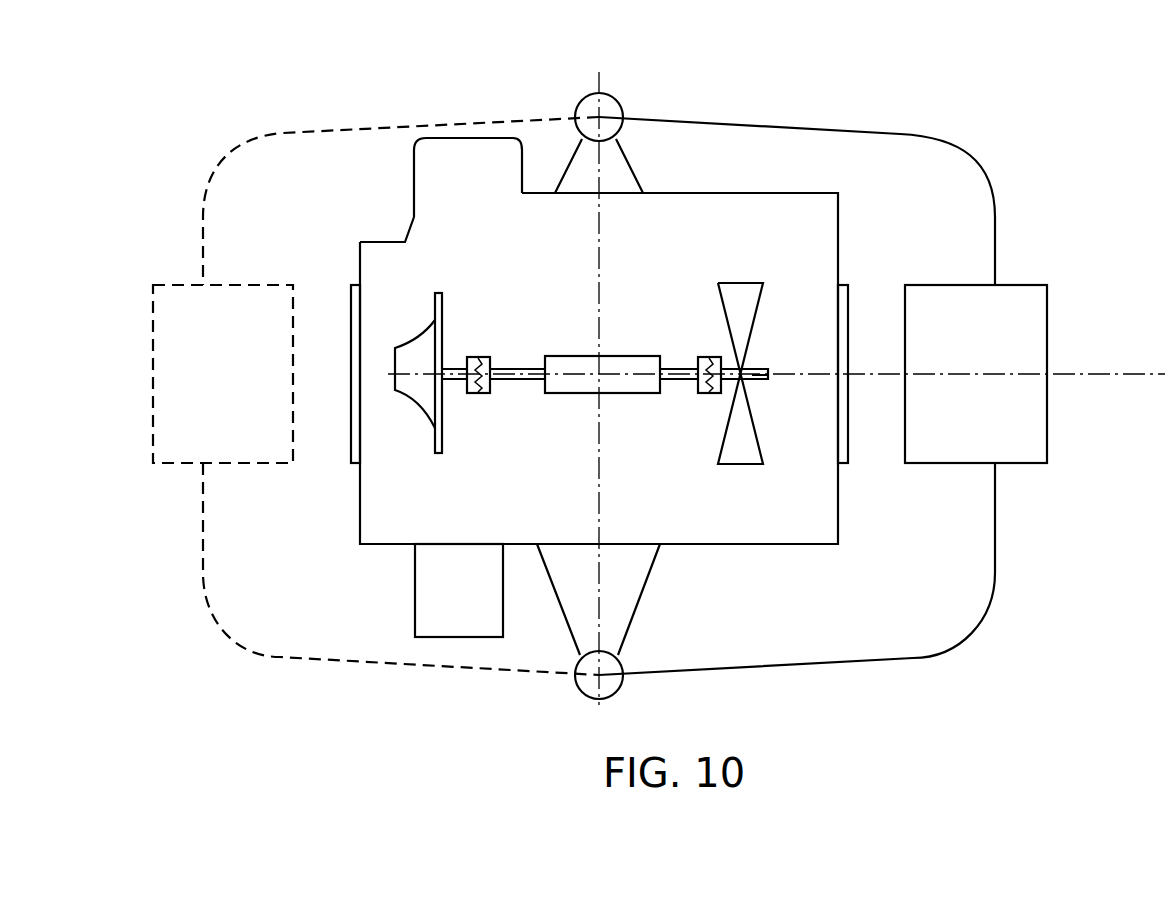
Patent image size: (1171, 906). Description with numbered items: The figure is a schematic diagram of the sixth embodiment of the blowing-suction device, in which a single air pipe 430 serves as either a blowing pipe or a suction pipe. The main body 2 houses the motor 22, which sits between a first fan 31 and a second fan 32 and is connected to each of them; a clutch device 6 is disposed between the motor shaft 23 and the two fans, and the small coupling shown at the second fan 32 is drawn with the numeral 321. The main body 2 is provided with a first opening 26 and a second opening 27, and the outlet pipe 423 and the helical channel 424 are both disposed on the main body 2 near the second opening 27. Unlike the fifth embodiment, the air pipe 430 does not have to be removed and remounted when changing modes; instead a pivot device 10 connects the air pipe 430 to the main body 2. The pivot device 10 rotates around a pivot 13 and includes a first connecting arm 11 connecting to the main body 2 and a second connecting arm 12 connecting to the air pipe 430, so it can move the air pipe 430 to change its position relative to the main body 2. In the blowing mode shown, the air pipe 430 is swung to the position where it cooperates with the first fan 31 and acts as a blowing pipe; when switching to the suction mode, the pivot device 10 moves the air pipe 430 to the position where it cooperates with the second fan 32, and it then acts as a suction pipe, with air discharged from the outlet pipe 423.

The pivot device 10 is at (550, 88).
The first connecting arm 11 is at (582, 175).
The second connecting arm 12 is at (730, 122).
The pivot 13 is at (600, 82).
The main body 2 is at (752, 195).
The motor 22 is at (621, 390).
The motor shaft 23 is at (524, 376).
The first opening 26 is at (843, 300).
The second opening 27 is at (355, 345).
The first fan 31 is at (742, 448).
The second fan 32 is at (443, 300).
The impeller shaft 321 is at (457, 370).
The clutch device 6 is at (485, 392).
The outlet pipe 423 is at (457, 624).
The helical channel 424 is at (440, 155).
The air pipe 430 is at (983, 296).